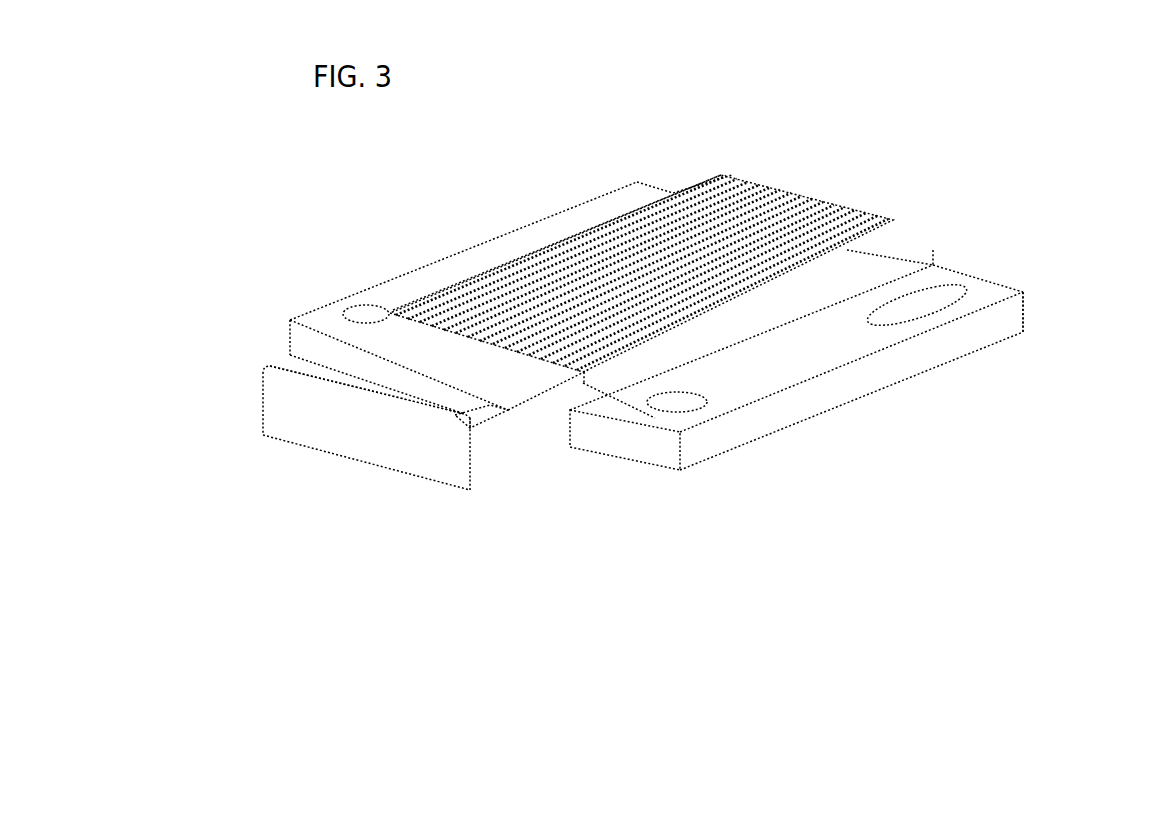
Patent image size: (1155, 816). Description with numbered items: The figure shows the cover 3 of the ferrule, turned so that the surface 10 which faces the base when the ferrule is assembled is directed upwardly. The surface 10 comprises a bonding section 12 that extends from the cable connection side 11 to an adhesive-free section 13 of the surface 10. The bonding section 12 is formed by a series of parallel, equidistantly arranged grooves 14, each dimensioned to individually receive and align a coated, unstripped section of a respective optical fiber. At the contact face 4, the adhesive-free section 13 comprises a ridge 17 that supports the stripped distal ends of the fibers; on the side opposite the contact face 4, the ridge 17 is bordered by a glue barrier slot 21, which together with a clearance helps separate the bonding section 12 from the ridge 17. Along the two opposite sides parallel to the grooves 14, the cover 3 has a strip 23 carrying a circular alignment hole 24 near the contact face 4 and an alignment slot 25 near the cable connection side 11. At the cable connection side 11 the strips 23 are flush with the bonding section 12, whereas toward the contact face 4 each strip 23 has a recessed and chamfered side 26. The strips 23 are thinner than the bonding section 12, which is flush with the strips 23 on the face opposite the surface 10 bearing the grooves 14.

The cover 3 is at (1027, 320).
The contact face 4 is at (270, 469).
The surface 10 is at (702, 116).
The cable connection side 11 is at (992, 233).
The bonding section 12 is at (813, 168).
The adhesive-free section 13 is at (289, 294).
The grooves 14 is at (854, 195).
The ridge 17 is at (290, 366).
The glue barrier slot 21 is at (499, 425).
The strip 23 is at (505, 237).
The circular alignment hole 24 is at (678, 410).
The alignment slot 25 is at (927, 303).
The recessed and chamfered side 26 is at (631, 476).